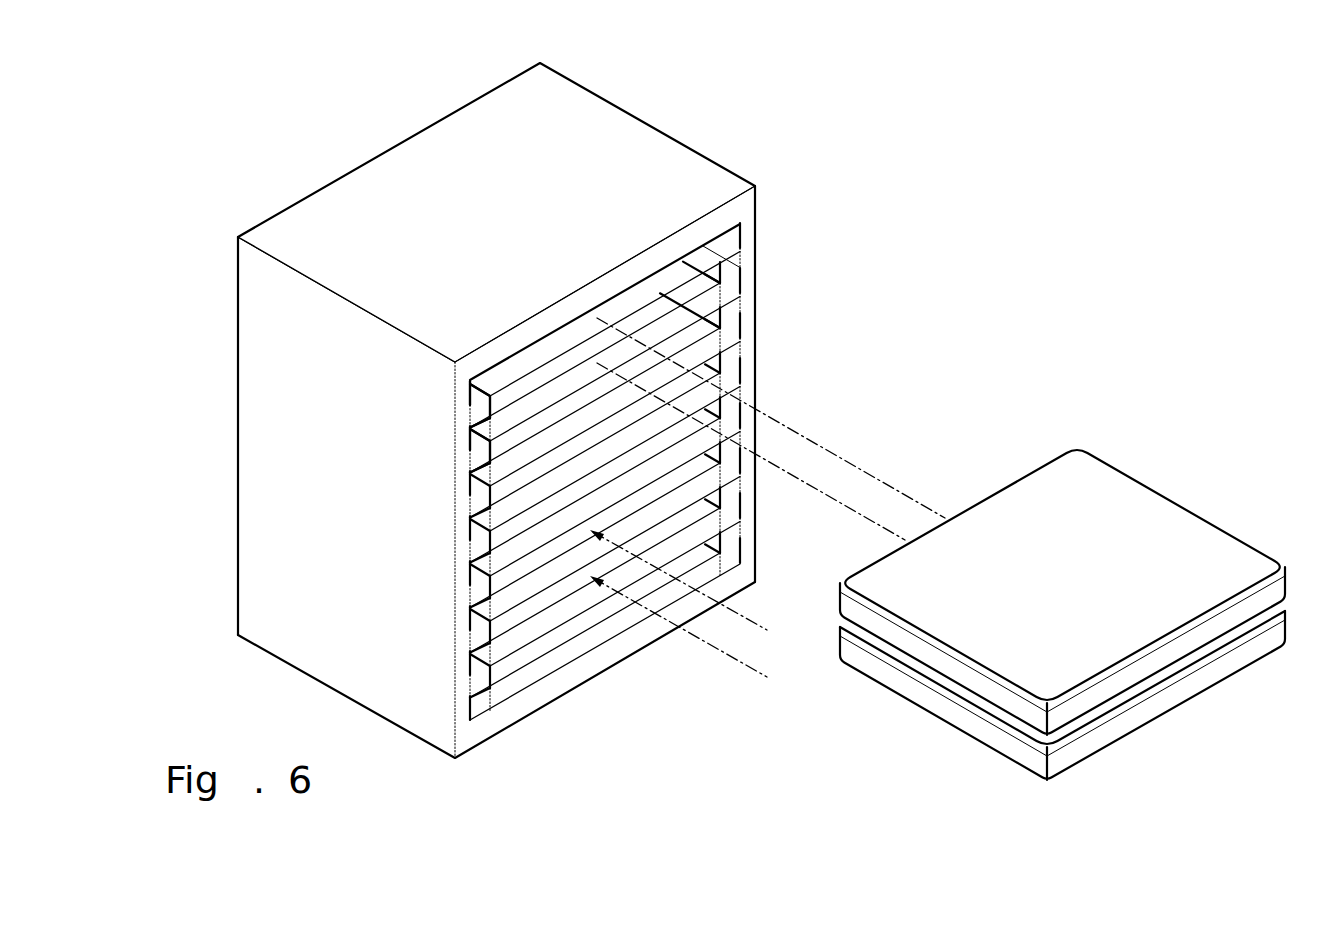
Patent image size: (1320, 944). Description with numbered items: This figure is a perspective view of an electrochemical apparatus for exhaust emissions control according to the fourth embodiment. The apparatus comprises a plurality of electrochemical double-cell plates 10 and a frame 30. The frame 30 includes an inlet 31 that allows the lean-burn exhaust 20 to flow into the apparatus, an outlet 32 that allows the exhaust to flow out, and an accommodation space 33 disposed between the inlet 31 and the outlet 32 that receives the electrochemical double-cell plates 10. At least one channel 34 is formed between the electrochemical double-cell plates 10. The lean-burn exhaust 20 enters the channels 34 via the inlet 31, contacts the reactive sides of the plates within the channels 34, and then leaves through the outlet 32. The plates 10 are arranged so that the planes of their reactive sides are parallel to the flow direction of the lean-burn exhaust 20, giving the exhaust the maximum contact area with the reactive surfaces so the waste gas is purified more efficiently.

The electrochemical double-cell plate 10 is at (950, 665).
The lean-burn exhaust 20 is at (733, 610).
The frame 30 is at (697, 137).
The inlet 31 is at (672, 317).
The outlet 32 is at (333, 186).
The accommodation space 33 is at (492, 402).
The channel 34 is at (530, 600).